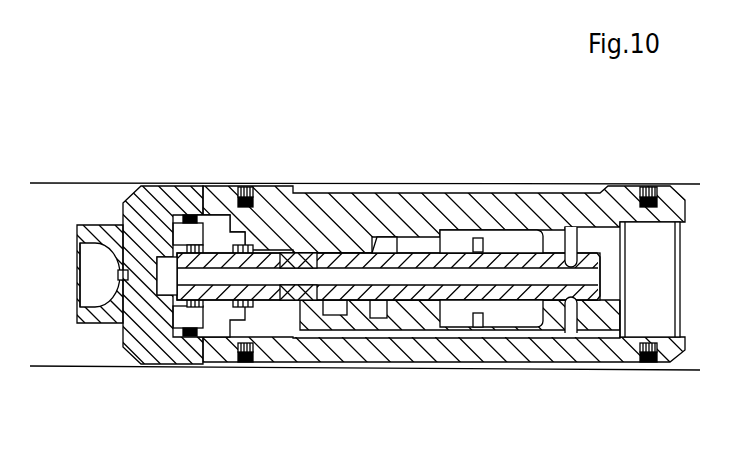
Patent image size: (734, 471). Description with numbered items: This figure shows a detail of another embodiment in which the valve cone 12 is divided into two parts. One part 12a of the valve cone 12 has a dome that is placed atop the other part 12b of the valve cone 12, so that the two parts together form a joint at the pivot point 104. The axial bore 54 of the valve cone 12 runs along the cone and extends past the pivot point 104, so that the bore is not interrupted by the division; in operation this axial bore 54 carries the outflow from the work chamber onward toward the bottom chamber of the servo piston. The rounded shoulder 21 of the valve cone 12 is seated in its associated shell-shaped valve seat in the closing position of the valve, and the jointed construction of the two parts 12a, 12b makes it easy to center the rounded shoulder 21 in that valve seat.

The one part of the valve cone 12a is at (203, 260).
The valve cone 12 is at (358, 303).
The other part of the valve cone 12b is at (525, 293).
The rounded shoulder 21 is at (540, 257).
The axial bore 54 is at (498, 280).
The pivot point 104 is at (293, 297).